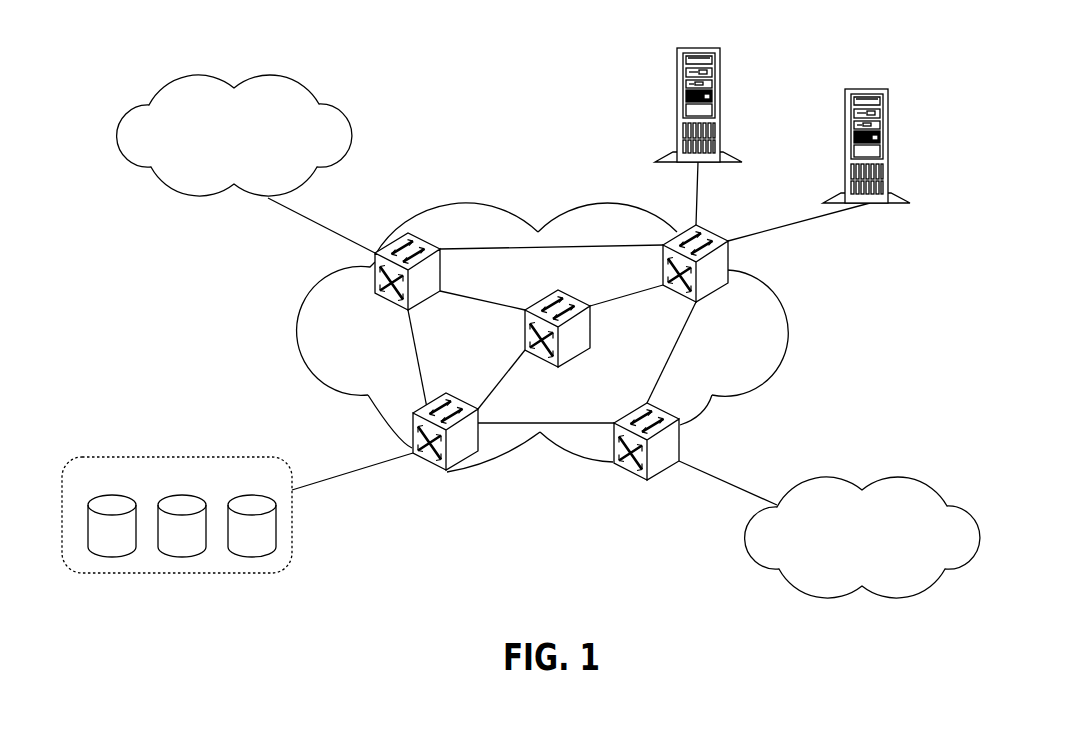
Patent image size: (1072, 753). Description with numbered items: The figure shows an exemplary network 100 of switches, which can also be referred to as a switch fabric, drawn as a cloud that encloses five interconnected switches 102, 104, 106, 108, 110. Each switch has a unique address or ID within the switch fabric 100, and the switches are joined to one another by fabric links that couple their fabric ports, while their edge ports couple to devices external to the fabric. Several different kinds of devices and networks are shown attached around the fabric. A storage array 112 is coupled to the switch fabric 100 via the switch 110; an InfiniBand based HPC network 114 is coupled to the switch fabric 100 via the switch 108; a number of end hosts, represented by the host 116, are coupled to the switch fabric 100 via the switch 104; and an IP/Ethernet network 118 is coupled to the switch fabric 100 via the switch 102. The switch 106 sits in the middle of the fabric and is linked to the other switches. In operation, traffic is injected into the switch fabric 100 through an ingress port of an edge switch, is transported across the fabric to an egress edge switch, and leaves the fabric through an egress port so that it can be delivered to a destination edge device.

The network of switches (switch fabric) 100 is at (788, 332).
The switch 102 is at (647, 482).
The switch 104 is at (730, 284).
The switch 106 is at (556, 291).
The switch 108 is at (374, 285).
The switch 110 is at (446, 393).
The storage array 112 is at (268, 573).
The InfiniBand based HPC network 114 is at (113, 138).
The host 116 is at (912, 200).
The IP/Ethernet network 118 is at (980, 535).